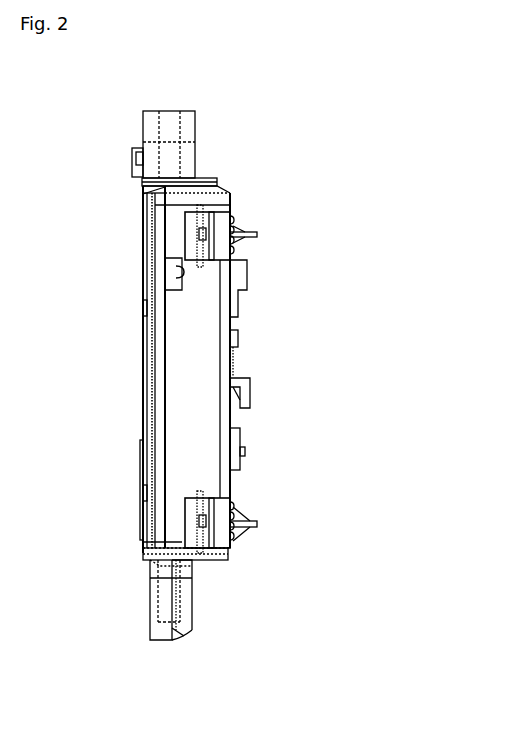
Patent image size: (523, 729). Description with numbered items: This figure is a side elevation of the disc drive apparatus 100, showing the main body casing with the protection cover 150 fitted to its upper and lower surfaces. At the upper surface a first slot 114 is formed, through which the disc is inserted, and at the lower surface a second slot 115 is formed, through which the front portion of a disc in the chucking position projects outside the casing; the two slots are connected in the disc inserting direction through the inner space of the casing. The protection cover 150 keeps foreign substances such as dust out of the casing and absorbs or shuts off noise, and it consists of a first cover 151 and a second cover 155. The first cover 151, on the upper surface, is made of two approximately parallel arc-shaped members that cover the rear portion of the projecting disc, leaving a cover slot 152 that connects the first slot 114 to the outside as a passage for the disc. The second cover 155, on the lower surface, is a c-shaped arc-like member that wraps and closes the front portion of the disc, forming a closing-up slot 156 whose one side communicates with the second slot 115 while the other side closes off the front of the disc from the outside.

The disc drive apparatus 100 is at (65, 97).
The first slot 114 is at (141, 193).
The second slot 115 is at (158, 566).
The protection cover 150 is at (143, 129).
The first cover 151 is at (143, 118).
The cover slot 152 is at (161, 122).
The second cover 155 is at (192, 598).
The closing-up slot 156 is at (177, 643).